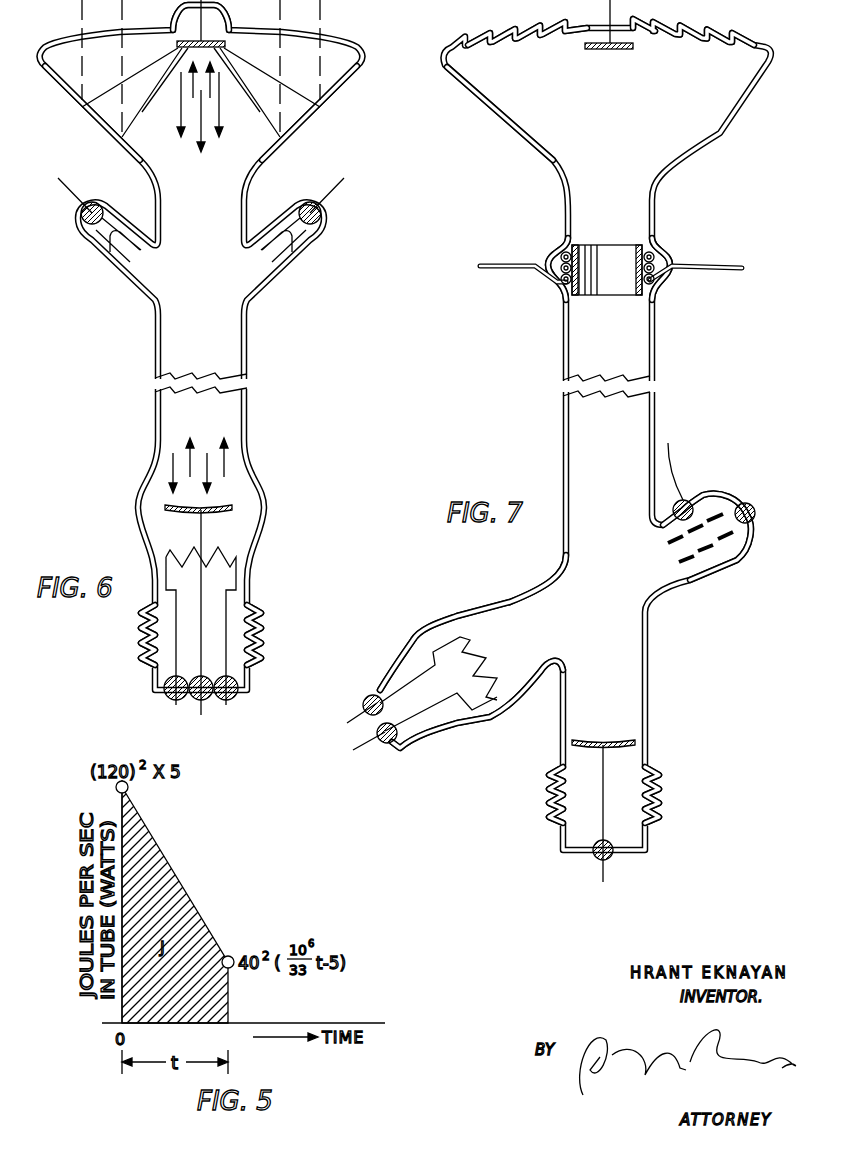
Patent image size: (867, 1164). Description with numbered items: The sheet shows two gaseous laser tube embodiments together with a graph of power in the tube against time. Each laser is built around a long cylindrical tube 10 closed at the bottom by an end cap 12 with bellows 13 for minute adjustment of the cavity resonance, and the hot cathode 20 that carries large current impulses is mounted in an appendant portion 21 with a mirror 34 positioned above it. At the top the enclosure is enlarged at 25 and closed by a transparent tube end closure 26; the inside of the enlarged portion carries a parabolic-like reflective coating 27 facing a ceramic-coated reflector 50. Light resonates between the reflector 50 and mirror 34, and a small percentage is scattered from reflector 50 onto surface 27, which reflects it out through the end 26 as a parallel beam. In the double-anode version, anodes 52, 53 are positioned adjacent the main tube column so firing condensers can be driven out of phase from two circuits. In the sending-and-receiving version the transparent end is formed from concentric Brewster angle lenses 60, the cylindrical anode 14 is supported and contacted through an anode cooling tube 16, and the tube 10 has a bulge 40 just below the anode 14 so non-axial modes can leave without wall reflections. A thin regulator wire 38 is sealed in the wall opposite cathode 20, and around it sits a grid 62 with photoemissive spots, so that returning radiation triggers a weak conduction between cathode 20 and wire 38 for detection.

In FIG. 6, the cylindrical tube 10 is at (156, 408).
In FIG. 7, the cylindrical tube 10 is at (563, 410).
In FIG. 6, the end cap 12 is at (240, 695).
In FIG. 7, the end cap 12 is at (636, 853).
In FIG. 6, the bellows 13 is at (257, 616).
In FIG. 7, the bellows 13 is at (661, 780).
In FIG. 7, the cylindrical anode 14 is at (623, 280).
In FIG. 7, the anode cooling tube 16 is at (703, 264).
In FIG. 6, the hot cathode 20 is at (230, 554).
In FIG. 7, the hot cathode 20 is at (478, 655).
In FIG. 7, the appendant portion 21 is at (508, 602).
In FIG. 6, the enlarged beam output end 25 is at (305, 125).
In FIG. 6, the tube end closure 26 is at (175, 22).
In FIG. 6, the reflective coating surface 27 is at (123, 139).
In FIG. 7, the reflective coating surface 27 is at (506, 117).
In FIG. 6, the mirror 34 is at (210, 512).
In FIG. 7, the mirror 34 is at (597, 740).
In FIG. 7, the thin wire 38 is at (647, 568).
In FIG. 7, the bulge 40 is at (550, 288).
In FIG. 6, the reflector 50 is at (227, 44).
In FIG. 7, the reflector 50 is at (636, 48).
In FIG. 6, the anode 52 is at (104, 252).
In FIG. 6, the anode 53 is at (298, 252).
In FIG. 7, the Brewster angle lenses 60 is at (663, 22).
In FIG. 7, the grid 62 is at (712, 550).